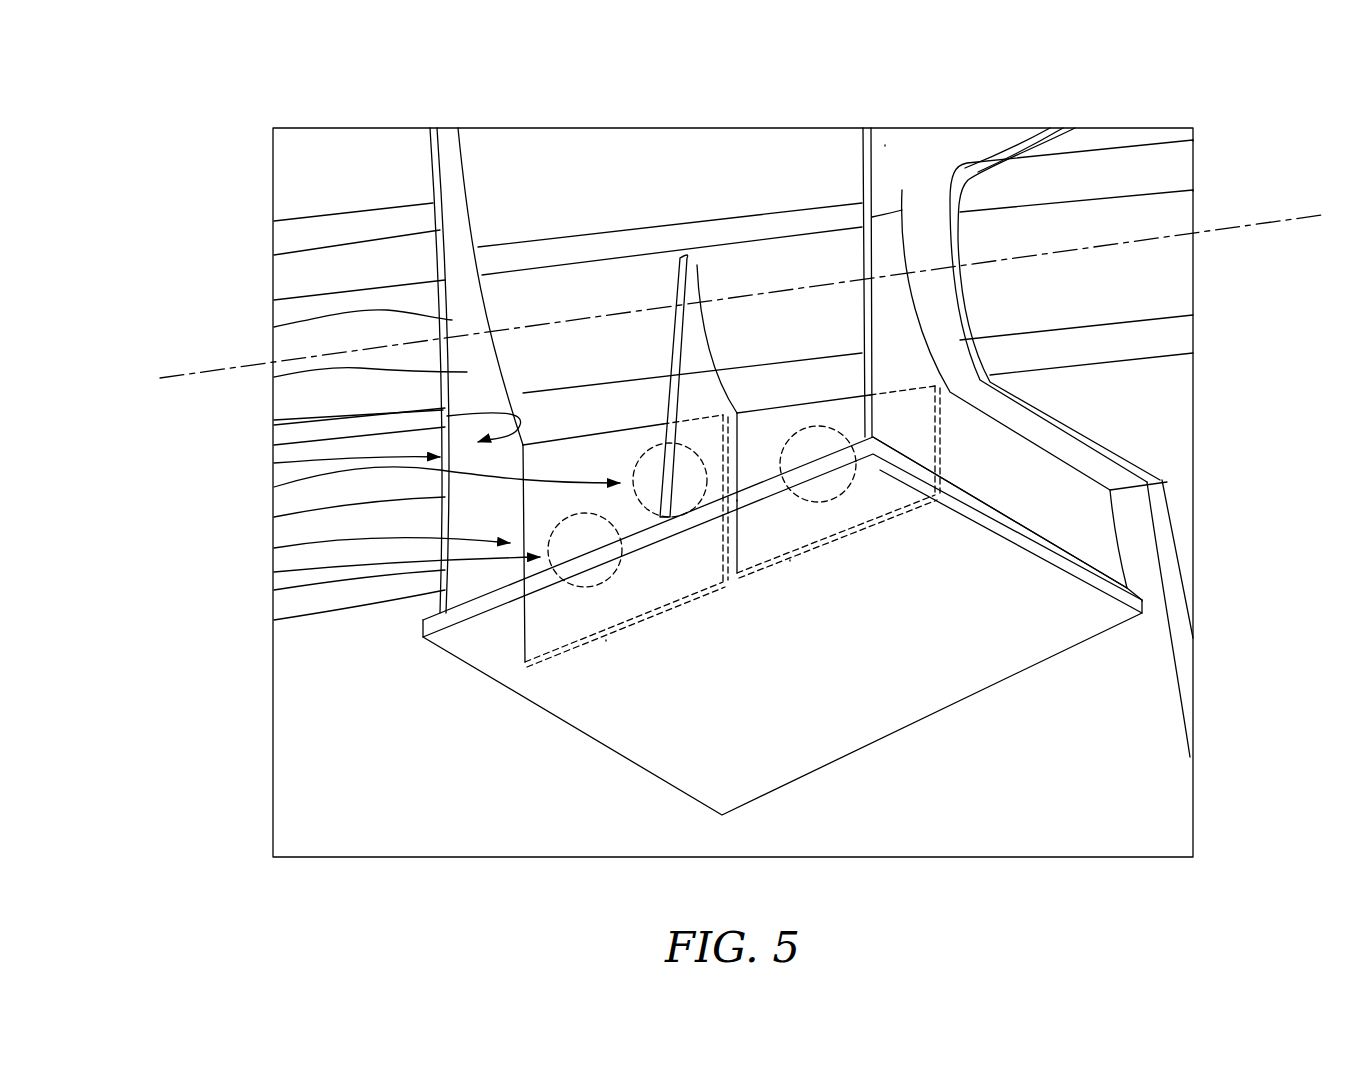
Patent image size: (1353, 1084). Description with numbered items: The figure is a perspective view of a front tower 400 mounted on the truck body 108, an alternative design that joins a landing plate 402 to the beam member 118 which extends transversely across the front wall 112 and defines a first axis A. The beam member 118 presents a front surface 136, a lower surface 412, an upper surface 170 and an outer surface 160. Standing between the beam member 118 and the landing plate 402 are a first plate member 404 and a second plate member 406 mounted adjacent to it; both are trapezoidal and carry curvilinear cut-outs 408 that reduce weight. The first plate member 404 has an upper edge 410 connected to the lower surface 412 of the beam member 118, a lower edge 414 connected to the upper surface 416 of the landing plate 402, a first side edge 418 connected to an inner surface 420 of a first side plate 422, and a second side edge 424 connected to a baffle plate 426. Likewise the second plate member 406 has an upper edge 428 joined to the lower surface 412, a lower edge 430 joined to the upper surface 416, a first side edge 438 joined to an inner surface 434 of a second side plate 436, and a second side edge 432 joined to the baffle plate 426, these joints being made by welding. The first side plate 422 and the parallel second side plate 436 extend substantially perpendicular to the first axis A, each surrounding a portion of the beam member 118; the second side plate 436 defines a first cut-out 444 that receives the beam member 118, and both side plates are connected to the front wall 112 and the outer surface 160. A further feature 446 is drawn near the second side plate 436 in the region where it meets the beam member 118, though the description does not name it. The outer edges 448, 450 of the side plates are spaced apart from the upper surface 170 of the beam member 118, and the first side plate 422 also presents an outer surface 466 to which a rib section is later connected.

The truck body 108 is at (268, 144).
The front wall 112 is at (337, 167).
The front tower 400 is at (416, 156).
The upper edge 410 is at (597, 433).
The baffle plate 426 is at (698, 262).
The upper edge 428 is at (765, 406).
The inner surface 434 is at (860, 158).
The second side plate 436 is at (885, 145).
The outer edge 450 is at (902, 190).
The upper surface 170 is at (1172, 170).
The first axis A is at (744, 284).
The rail flange 446 is at (912, 246).
The beam member 118 is at (1157, 286).
The lower surface 412 is at (1173, 340).
The first cut-out 444 is at (943, 363).
The cut-outs 408 is at (274, 548).
The first side edge 438 is at (1160, 482).
The upper surface 416 is at (1016, 519).
The second plate member 406 is at (980, 615).
The second side edge 424 is at (870, 555).
The landing plate 402 is at (968, 655).
The second side edge 432 is at (750, 537).
The lower edge 430 is at (787, 565).
The lower edge 414 is at (607, 640).
The first side edge 418 is at (274, 572).
The first plate member 404 is at (274, 517).
The outer surface 466 is at (274, 487).
The inner surface 420 is at (274, 445).
The front surface 136 is at (295, 412).
The first side plate 422 is at (274, 377).
The outer edge 448 is at (274, 327).
The outer surface 160 is at (278, 263).